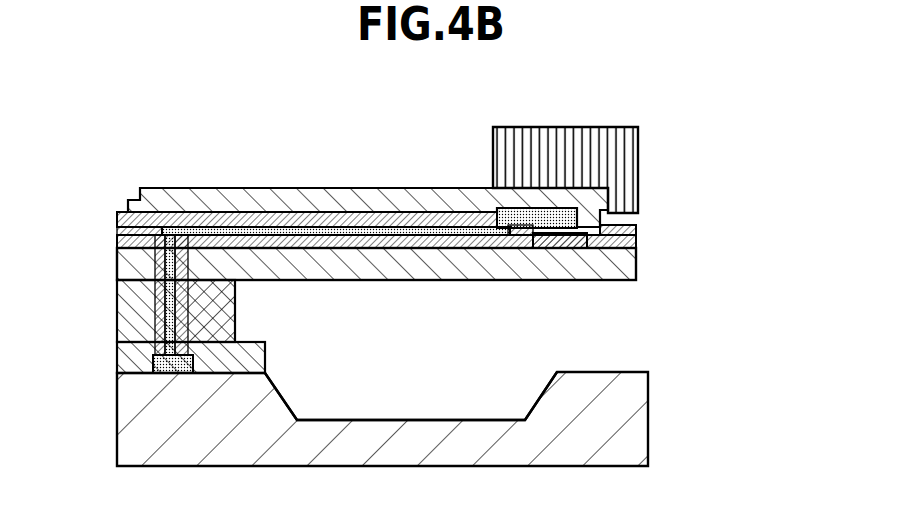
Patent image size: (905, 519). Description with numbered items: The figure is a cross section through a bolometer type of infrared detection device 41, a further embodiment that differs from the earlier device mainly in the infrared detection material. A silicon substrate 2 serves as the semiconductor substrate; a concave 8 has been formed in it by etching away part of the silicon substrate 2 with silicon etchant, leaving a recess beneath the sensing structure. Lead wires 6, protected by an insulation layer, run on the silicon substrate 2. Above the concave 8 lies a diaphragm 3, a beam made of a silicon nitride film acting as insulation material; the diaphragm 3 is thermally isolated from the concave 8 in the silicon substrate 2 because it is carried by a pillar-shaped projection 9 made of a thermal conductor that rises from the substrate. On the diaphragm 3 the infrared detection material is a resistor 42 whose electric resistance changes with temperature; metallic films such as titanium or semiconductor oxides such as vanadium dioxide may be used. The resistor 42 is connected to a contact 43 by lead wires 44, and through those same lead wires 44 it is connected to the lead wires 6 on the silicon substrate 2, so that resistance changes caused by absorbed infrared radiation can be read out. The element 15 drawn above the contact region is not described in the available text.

The silicon substrate 2 is at (650, 412).
The concave 8 is at (465, 398).
The lead wires 6 is at (155, 362).
The pillar-shaped projection 9 is at (117, 307).
The diaphragm 3 is at (620, 265).
The resistor 42 is at (612, 238).
The lead wires 44 is at (366, 225).
The contact 43 is at (583, 223).
The flexible wiring board 15 is at (577, 138).
The infrared detection device 41 is at (746, 208).